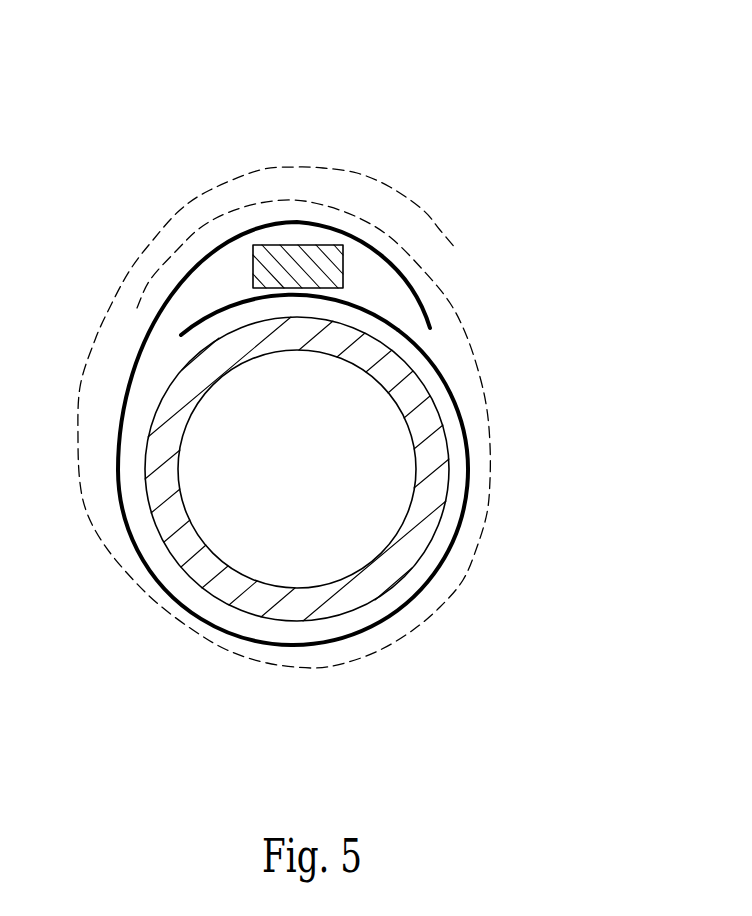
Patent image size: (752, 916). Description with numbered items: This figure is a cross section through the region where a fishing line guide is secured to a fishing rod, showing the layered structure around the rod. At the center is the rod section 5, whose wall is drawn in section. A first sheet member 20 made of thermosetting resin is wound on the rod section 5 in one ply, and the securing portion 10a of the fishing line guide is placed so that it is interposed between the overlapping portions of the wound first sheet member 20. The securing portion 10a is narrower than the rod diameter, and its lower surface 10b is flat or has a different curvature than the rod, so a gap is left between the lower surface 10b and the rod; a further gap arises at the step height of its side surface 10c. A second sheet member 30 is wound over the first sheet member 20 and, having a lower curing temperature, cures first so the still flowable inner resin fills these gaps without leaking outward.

The rod section 5 is at (433, 482).
The securing portion 10a is at (315, 257).
The lower surface 10b is at (300, 288).
The side surface 10c is at (252, 266).
The first sheet member 20 is at (460, 403).
The second sheet member 30 is at (295, 167).